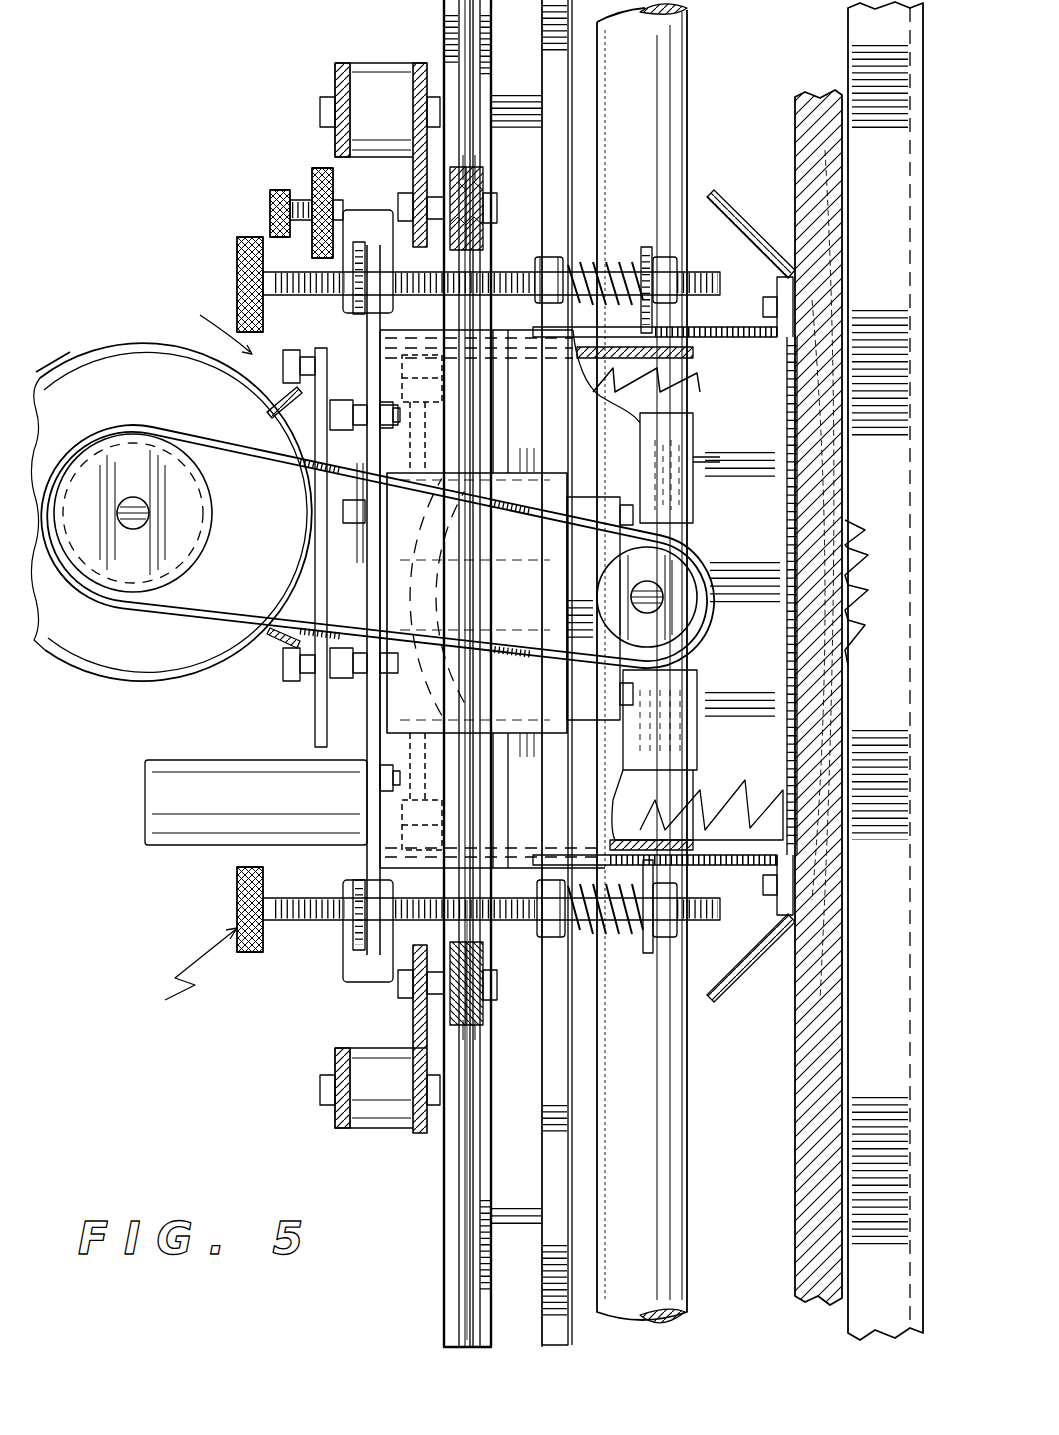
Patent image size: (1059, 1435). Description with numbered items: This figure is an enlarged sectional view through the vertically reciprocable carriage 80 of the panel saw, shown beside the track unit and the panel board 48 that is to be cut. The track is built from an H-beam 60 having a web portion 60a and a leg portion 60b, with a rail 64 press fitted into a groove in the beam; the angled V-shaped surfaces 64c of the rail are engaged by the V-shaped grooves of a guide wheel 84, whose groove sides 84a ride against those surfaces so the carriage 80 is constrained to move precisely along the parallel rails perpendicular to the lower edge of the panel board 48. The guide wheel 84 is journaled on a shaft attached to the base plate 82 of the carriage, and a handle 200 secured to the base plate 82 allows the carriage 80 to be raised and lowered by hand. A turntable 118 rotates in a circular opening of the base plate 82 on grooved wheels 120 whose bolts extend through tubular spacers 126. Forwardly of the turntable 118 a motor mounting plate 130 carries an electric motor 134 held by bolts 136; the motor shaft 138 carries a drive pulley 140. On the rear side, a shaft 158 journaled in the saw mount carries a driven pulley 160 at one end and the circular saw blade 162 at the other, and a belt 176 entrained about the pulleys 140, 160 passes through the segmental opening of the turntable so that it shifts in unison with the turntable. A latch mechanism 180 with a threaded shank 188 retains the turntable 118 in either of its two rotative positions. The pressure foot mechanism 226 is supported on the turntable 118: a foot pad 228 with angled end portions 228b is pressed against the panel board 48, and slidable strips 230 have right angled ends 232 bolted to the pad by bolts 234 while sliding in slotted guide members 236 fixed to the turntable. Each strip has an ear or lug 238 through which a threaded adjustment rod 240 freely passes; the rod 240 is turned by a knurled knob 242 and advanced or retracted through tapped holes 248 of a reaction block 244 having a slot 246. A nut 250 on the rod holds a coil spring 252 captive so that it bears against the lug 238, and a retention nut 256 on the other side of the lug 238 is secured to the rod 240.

The panel board 48 is at (795, 1245).
The H-beam 60 is at (447, 1271).
The web portion 60a is at (520, 1210).
The leg portion 60b is at (557, 1330).
The rail 64 is at (450, 1165).
The angled V-shaped surface 64c is at (466, 1308).
The carriage 80 is at (206, 322).
The base plate 82 is at (417, 1133).
The guide wheel 84 is at (485, 200).
The collar rings 84a is at (478, 160).
The turntable 118 is at (355, 860).
The wheel 120 is at (425, 437).
The tubular spacer or bushing 126 is at (413, 1017).
The motor mounting plate 130 is at (315, 713).
The electric motor 134 is at (112, 690).
The bolt 136 is at (395, 458).
The shaft 138 is at (133, 497).
The drive pulley 140 is at (200, 562).
The shaft 158 is at (632, 597).
The driven pulley 160 is at (680, 620).
The circular saw blade 162 is at (862, 600).
The belt 176 is at (515, 628).
The latch mechanism 180 is at (258, 189).
The shank 188 is at (302, 195).
The handle 200 is at (335, 63).
The pressure foot mechanism 226 is at (182, 973).
The foot pad 228 is at (787, 548).
The angled end portion 228b is at (752, 192).
The slidable strip 230 is at (725, 340).
The right angled end 232 is at (792, 275).
The bolt 234 is at (763, 312).
The slotted guide member 236 is at (785, 425).
The ear or lug 238 is at (660, 245).
The threaded adjustment rod 240 is at (510, 272).
The knurled knob 242 is at (237, 256).
The reaction block 244 is at (378, 225).
The slot 246 is at (352, 308).
The tapped hole 248 is at (338, 268).
The nut 250 is at (560, 268).
The coil spring 252 is at (598, 265).
The retention nut 256 is at (663, 250).